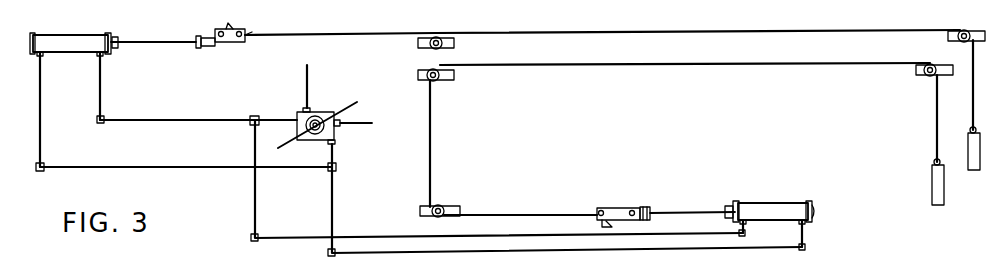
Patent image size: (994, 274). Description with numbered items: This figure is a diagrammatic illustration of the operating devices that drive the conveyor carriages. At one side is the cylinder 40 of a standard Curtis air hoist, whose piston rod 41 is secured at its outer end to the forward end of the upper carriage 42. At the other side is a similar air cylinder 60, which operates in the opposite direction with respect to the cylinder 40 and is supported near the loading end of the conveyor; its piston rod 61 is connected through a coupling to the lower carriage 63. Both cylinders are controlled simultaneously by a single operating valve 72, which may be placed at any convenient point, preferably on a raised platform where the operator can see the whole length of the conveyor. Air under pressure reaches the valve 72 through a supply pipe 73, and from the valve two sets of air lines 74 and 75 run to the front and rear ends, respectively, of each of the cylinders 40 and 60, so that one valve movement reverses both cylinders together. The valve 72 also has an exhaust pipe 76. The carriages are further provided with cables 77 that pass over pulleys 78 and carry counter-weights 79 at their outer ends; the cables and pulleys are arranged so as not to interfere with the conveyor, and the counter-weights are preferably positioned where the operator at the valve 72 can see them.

The cylinder 40 is at (70, 30).
The piston rod 41 is at (140, 42).
The carriage 42 is at (232, 43).
The air cylinder 60 is at (768, 210).
The piston rod 61 is at (677, 212).
The carriage 63 is at (620, 208).
The operating valve 72 is at (322, 111).
The pipe 73 is at (304, 84).
The air lines 74 is at (183, 112).
The air lines 75 is at (183, 162).
The exhaust pipe 76 is at (350, 127).
The cables 77 is at (569, 38).
The pulleys 78 is at (436, 36).
The counter-weights 79 is at (947, 172).